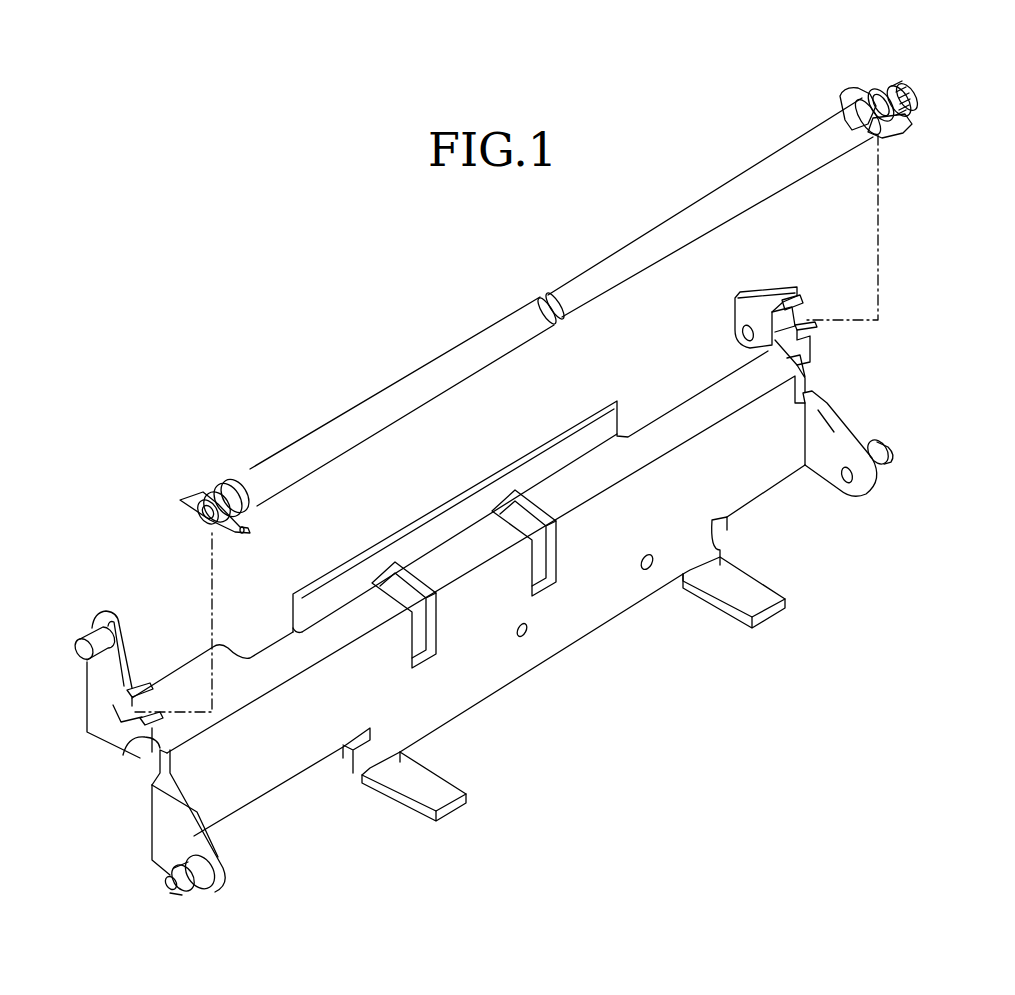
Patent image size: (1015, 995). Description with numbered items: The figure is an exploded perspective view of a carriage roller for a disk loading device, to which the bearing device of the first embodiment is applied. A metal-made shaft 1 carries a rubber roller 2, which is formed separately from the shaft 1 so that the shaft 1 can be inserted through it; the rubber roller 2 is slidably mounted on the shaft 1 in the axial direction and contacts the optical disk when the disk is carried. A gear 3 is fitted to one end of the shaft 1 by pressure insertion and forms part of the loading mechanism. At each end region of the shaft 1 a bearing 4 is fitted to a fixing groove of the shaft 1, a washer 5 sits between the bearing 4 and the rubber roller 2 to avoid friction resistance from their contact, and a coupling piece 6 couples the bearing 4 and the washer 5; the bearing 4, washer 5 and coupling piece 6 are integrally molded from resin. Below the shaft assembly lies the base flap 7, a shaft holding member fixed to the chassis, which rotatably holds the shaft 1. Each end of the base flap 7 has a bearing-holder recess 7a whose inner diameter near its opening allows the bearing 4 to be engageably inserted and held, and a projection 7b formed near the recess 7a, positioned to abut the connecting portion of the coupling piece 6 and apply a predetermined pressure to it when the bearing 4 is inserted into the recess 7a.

The shaft 1 is at (548, 300).
The rubber roller 2 is at (700, 208).
The gear 3 is at (915, 105).
The bearing 4 is at (865, 95).
The washer 5 is at (840, 95).
The coupling piece 6 is at (905, 130).
The base flap 7 is at (545, 655).
The bearing-holder recess 7a is at (808, 320).
The projection 7b is at (800, 308).